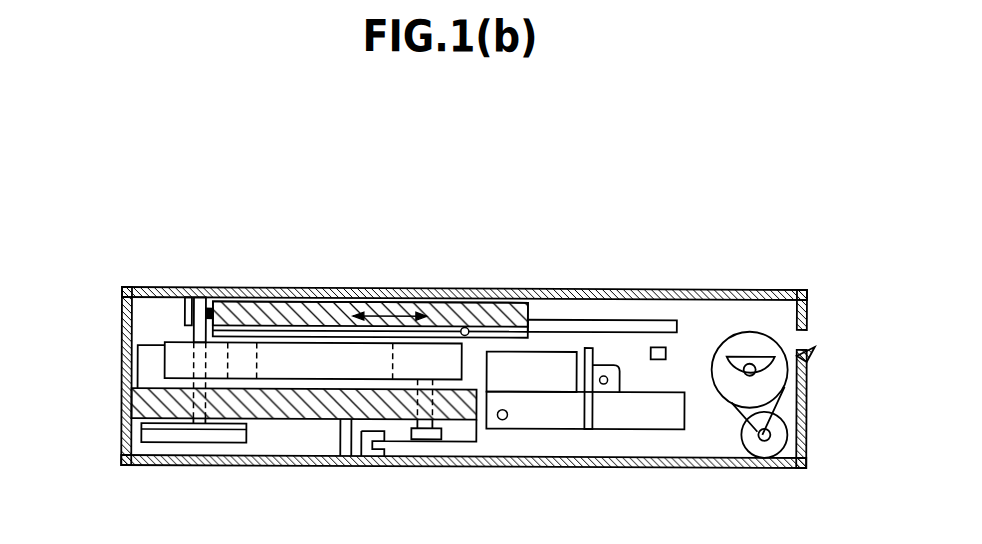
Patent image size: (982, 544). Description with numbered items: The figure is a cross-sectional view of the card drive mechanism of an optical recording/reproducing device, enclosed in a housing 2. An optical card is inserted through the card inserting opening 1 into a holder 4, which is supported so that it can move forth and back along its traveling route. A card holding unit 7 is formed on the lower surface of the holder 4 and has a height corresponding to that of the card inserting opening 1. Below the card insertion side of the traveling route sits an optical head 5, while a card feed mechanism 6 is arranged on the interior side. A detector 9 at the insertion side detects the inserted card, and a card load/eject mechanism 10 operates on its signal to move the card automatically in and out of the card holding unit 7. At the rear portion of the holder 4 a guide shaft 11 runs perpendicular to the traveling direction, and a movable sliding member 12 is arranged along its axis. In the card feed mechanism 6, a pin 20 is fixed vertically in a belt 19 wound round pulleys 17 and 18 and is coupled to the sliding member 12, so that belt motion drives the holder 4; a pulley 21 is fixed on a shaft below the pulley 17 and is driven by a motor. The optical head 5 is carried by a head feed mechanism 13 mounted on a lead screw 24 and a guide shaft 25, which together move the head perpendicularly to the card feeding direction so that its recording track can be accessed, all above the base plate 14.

The card inserting opening 1 is at (805, 332).
The housing 2 is at (694, 288).
The holder 4 is at (330, 310).
The optical head 5 is at (545, 380).
The card feed mechanism 6 is at (145, 281).
The card holding unit 7 is at (462, 326).
The detector 9 is at (668, 352).
The card load/eject mechanism 10 is at (762, 324).
The guide shaft 11 is at (218, 297).
The sliding member 12 is at (190, 297).
The head feed mechanism 13 is at (603, 353).
The base plate 14 is at (290, 418).
The pulley 17 is at (167, 343).
The pulley 18 is at (445, 372).
The belt 19 is at (338, 372).
The pin 20 is at (199, 297).
The pulley 21 is at (227, 442).
The lead screw 24 is at (606, 384).
The guide shaft 25 is at (508, 420).